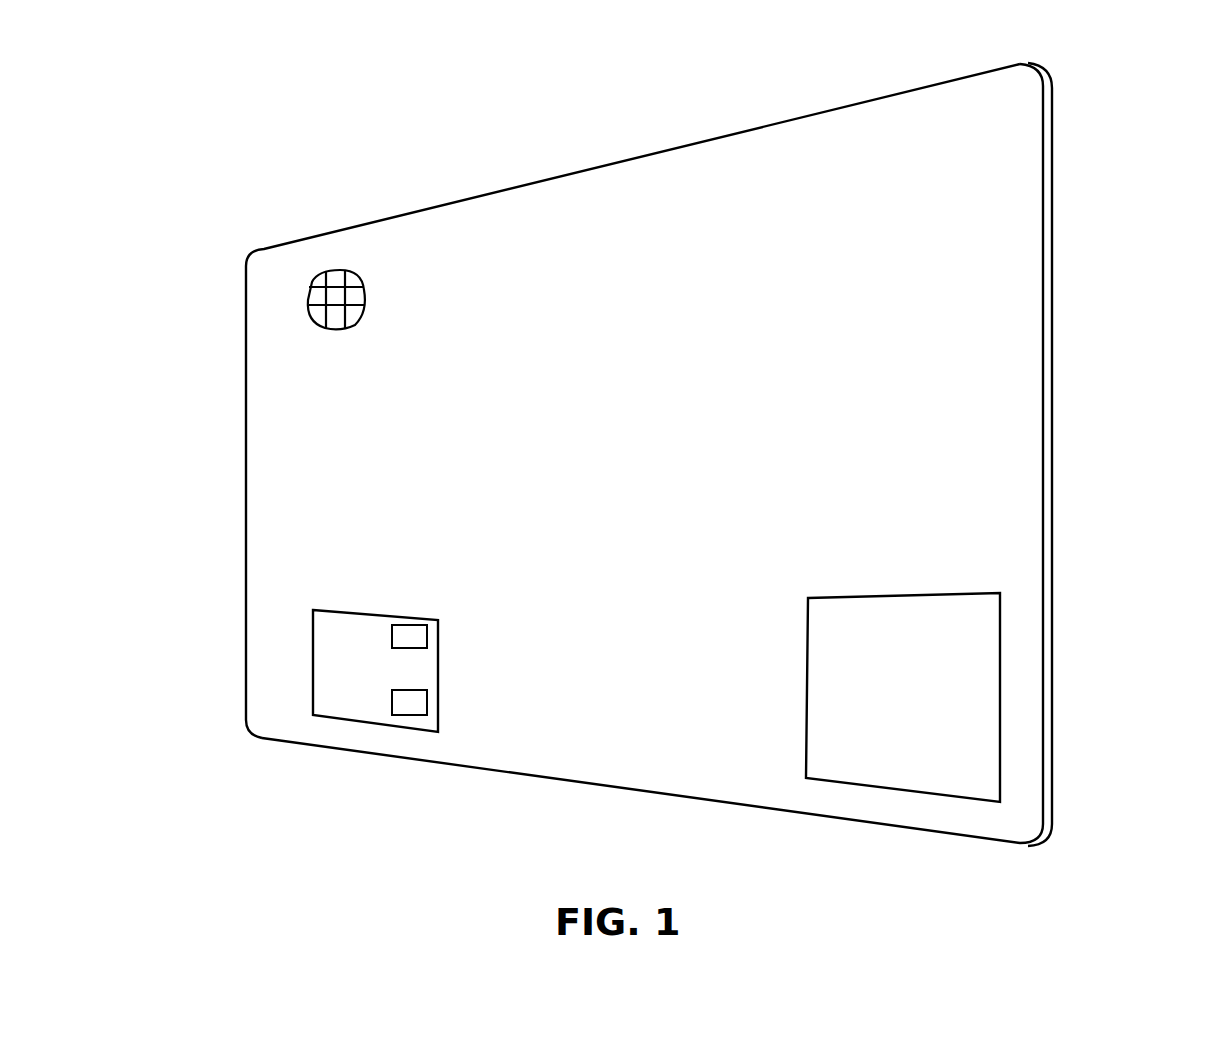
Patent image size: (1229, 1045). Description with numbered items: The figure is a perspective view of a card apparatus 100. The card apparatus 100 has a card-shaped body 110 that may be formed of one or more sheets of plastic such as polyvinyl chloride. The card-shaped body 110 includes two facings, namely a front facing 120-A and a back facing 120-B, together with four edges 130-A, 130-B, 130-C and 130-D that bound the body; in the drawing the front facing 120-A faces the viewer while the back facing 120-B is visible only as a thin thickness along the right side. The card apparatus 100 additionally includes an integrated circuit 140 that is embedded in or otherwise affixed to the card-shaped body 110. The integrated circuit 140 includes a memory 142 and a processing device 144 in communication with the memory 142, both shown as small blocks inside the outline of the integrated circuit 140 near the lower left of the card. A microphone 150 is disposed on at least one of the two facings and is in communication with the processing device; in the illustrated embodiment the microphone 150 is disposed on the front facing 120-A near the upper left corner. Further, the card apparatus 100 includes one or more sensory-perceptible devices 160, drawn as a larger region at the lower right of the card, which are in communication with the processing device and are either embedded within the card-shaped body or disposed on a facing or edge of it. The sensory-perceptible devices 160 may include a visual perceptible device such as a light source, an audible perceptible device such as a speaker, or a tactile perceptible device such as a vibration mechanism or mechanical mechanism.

The card apparatus 100 is at (699, 72).
The card-shaped body 110 is at (656, 466).
The front facing 120-A is at (293, 362).
The back facing 120-B is at (1016, 160).
The edge 130-A is at (1053, 400).
The edge 130-B is at (615, 790).
The edge 130-C is at (242, 531).
The edge 130-D is at (568, 175).
The integrated circuit 140 is at (404, 680).
The memory 142 is at (409, 636).
The processing device 144 is at (409, 702).
The microphone 150 is at (320, 272).
The sensory-perceptible device 160 is at (975, 707).